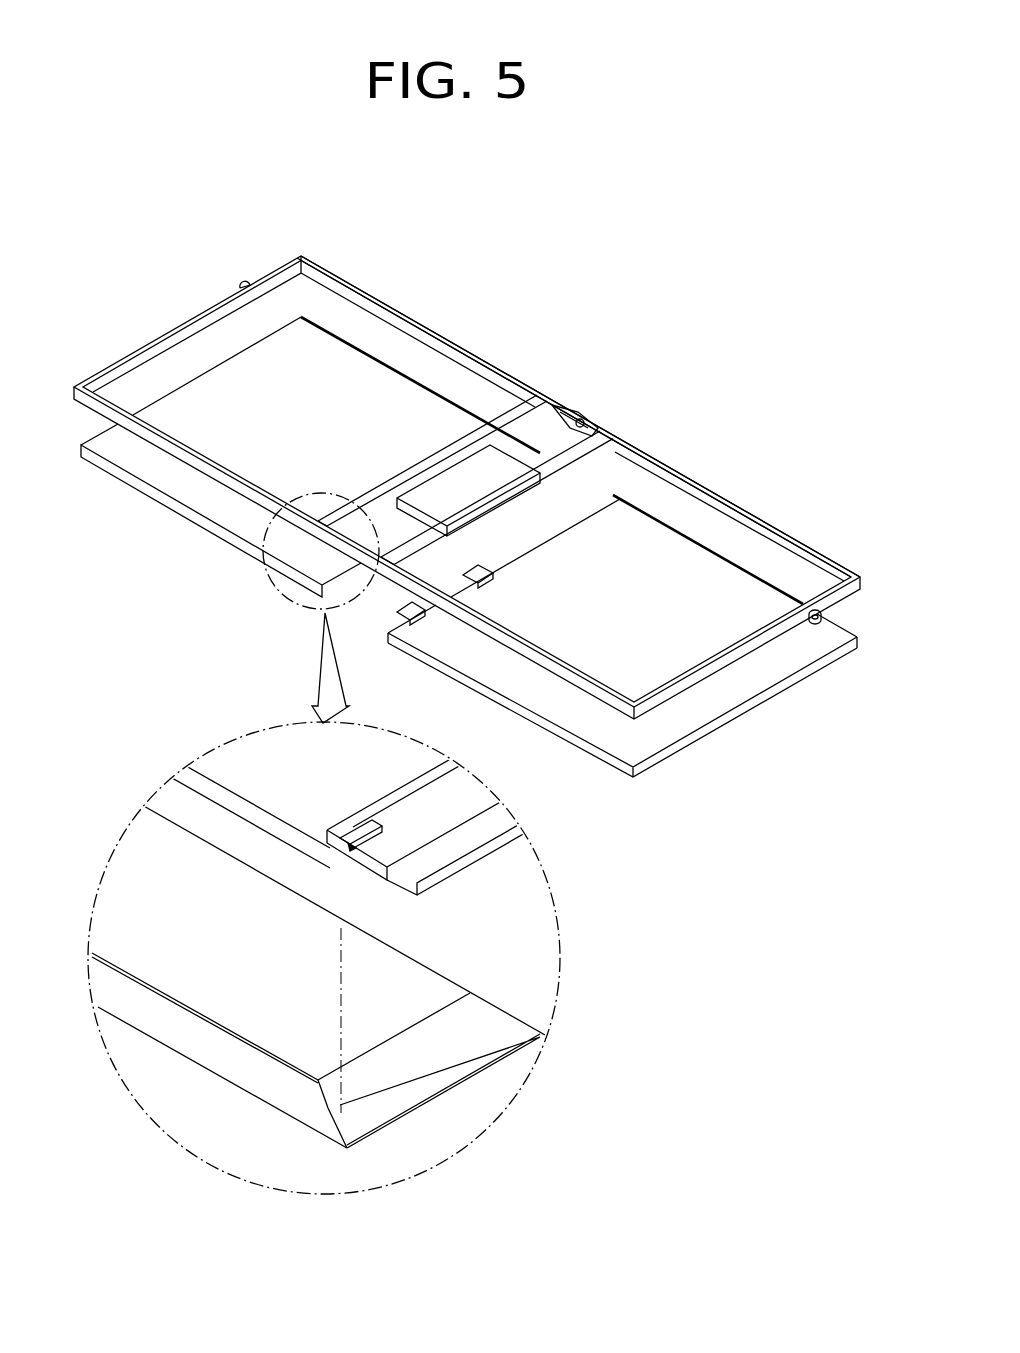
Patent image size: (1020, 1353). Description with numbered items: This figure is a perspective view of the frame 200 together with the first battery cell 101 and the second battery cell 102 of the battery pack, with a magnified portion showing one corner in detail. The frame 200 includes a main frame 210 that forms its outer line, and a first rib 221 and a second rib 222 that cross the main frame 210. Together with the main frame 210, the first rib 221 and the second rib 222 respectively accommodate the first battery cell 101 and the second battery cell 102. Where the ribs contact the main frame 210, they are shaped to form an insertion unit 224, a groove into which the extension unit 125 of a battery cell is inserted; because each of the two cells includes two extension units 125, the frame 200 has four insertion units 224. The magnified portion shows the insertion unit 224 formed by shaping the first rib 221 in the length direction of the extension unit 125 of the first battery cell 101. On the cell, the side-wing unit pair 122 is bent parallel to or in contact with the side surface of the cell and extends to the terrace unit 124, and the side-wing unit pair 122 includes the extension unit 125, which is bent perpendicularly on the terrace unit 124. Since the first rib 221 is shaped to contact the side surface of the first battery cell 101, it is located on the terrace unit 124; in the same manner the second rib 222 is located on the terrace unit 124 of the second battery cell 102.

The frame 200 is at (812, 534).
The main frame 210 is at (352, 282).
The first rib 221 is at (415, 464).
The second rib 222 is at (493, 512).
The insertion unit 224 is at (353, 851).
The first battery cell 101 is at (158, 473).
The second battery cell 102 is at (696, 713).
The side-wing unit pair 122 is at (163, 1017).
The terrace unit 124 is at (467, 1048).
The extension unit 125 is at (327, 1110).